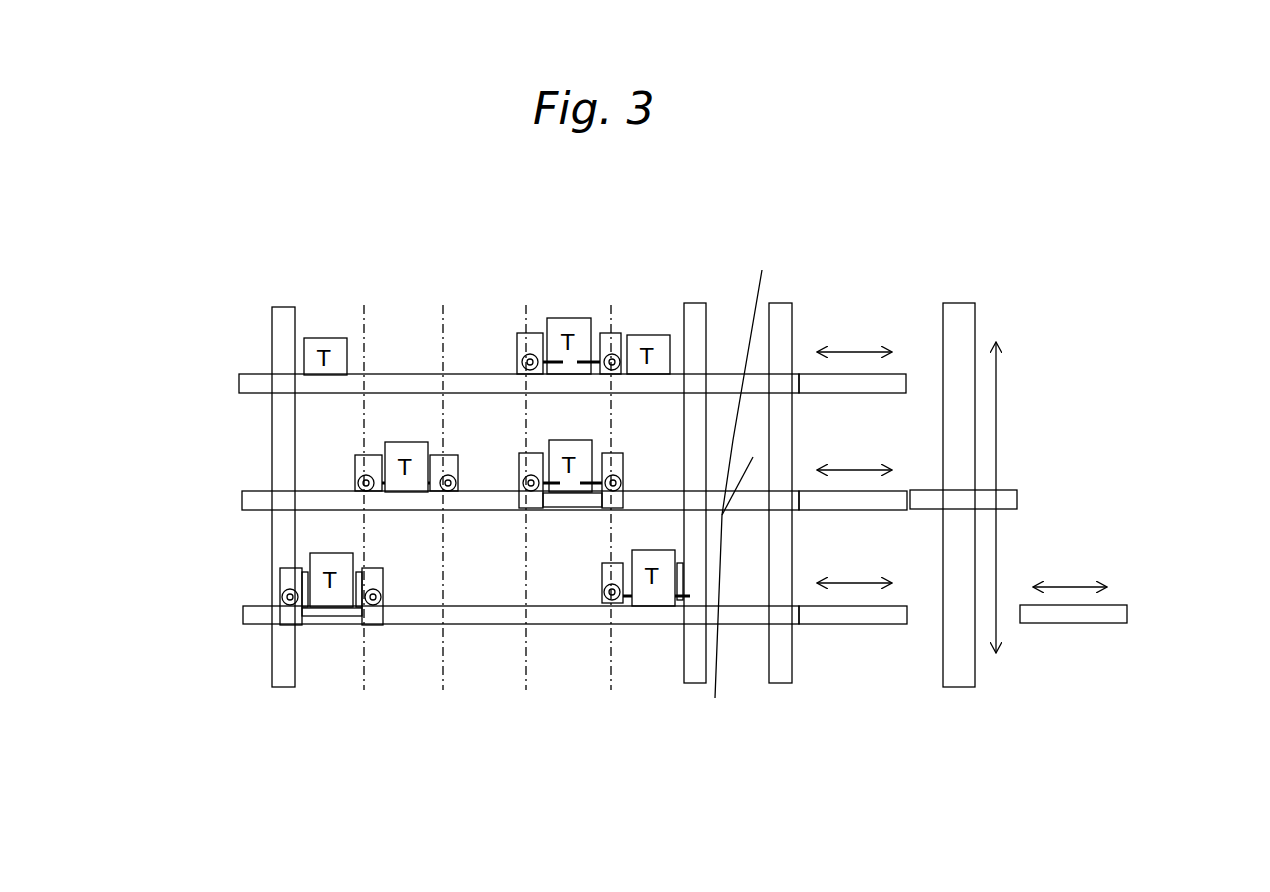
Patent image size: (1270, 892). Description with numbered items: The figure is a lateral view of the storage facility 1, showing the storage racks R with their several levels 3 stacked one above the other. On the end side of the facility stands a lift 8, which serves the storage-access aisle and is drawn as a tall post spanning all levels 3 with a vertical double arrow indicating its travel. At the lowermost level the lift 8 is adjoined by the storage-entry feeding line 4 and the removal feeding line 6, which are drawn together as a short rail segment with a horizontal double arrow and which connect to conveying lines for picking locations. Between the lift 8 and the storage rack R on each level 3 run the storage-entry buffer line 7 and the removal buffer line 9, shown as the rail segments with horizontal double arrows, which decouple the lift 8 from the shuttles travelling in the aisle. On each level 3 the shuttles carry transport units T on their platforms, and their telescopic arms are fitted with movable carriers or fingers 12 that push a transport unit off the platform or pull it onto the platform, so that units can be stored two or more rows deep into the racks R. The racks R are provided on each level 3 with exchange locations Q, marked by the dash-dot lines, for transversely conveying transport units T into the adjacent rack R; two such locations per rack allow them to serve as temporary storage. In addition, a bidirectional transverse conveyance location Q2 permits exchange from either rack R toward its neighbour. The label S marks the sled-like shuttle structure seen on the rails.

The storage facility 1 is at (880, 188).
The level 3 is at (207, 383).
The storage-entry feeding line 4 is at (1137, 561).
The removal feeding line 6 is at (1133, 597).
The storage-entry buffer line 7 is at (601, 532).
The removal buffer line 9 is at (863, 630).
The lift 8 is at (985, 300).
The carriers or fingers 12 is at (558, 497).
The sled S is at (330, 617).
The storage rack R is at (272, 282).
The exchange location Q is at (401, 311).
The bidirectional transverse conveyance location Q2 is at (484, 317).